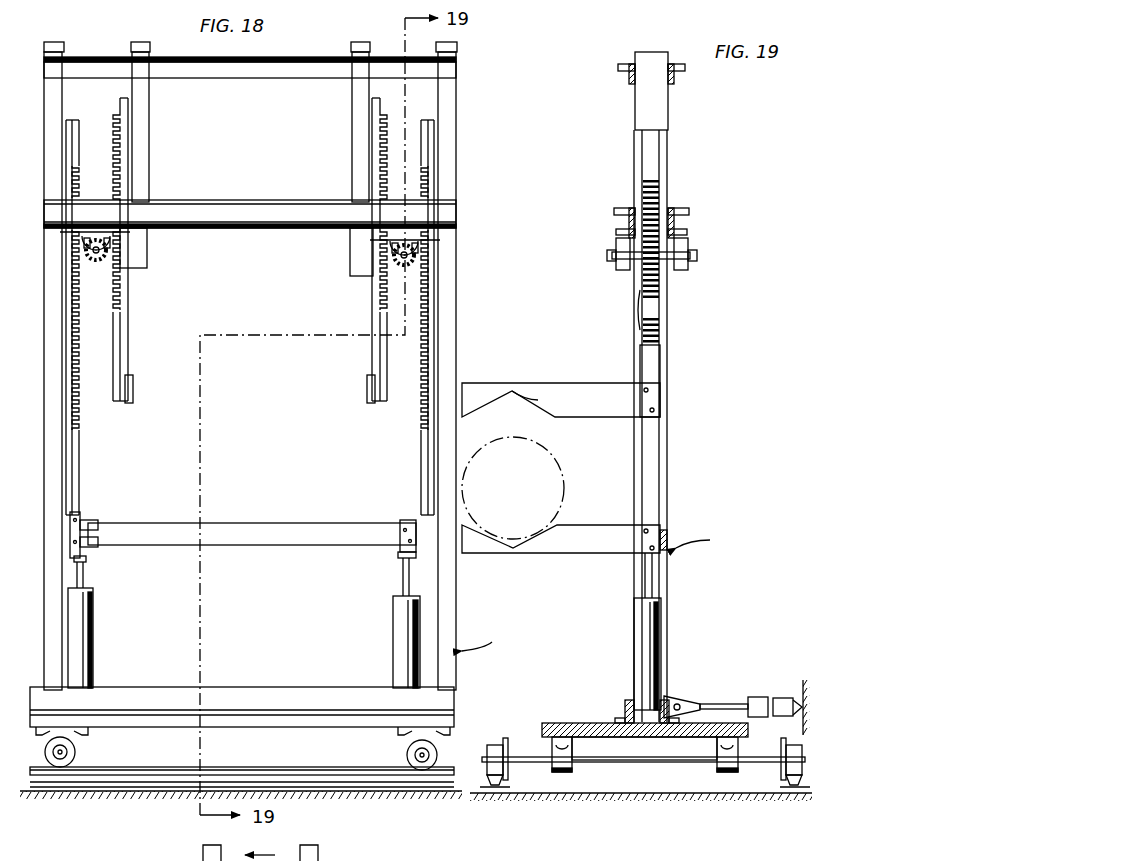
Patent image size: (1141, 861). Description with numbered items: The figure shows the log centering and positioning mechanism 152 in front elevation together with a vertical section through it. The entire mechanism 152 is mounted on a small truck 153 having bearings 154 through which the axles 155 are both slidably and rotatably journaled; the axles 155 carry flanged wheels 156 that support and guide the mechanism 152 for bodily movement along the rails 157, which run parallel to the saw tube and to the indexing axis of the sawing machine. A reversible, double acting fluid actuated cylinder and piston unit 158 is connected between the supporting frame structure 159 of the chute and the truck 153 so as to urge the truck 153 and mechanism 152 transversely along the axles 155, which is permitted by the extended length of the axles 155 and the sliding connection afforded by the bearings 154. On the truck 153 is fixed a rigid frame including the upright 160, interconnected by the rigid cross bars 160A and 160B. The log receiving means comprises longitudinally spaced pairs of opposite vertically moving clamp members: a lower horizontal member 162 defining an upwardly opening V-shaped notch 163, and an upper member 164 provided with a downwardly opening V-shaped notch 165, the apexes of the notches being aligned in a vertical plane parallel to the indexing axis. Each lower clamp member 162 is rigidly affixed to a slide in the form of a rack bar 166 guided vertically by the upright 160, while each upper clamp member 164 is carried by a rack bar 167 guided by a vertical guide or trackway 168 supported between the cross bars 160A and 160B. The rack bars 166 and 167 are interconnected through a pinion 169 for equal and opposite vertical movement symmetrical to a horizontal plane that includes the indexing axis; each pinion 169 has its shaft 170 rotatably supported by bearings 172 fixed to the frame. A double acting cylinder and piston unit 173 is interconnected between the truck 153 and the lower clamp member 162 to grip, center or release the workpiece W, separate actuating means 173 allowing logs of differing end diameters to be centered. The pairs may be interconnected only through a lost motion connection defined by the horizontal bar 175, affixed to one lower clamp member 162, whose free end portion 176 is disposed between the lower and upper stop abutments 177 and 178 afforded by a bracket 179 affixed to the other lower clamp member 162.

In FIG. 18, the work positioning mechanism 152 is at (495, 640).
In FIG. 19, the work positioning mechanism 152 is at (703, 539).
In FIG. 18, the truck 153 is at (285, 695).
In FIG. 19, the truck 153 is at (585, 723).
In FIG. 19, the bearings 154 is at (562, 775).
In FIG. 19, the axles 155 is at (680, 760).
In FIG. 19, the flanged wheels 156 is at (495, 745).
In FIG. 19, the rails 157 is at (492, 790).
In FIG. 19, the fluid actuated cylinder and piston unit 158 is at (756, 696).
In FIG. 19, the supporting frame structure 159 is at (800, 688).
In FIG. 18, the upright 160 is at (50, 472).
In FIG. 19, the upright 160 is at (651, 387).
In FIG. 18, the cross bar 160A is at (238, 72).
In FIG. 19, the cross bar 160A is at (624, 80).
In FIG. 18, the cross bar 160B is at (278, 212).
In FIG. 19, the cross bar 160B is at (625, 222).
In FIG. 18, the lower clamp member 162 is at (80, 518).
In FIG. 19, the lower clamp member 162 is at (572, 540).
In FIG. 19, the V-shaped notch 163 is at (500, 545).
In FIG. 18, the upper clamp member 164 is at (133, 390).
In FIG. 19, the upper clamp member 164 is at (585, 398).
In FIG. 19, the V-shaped notch 165 is at (535, 383).
In FIG. 18, the rack bar 166 is at (78, 418).
In FIG. 19, the rack bar 166 is at (660, 330).
In FIG. 18, the rack bar 167 is at (120, 308).
In FIG. 19, the rack bar 167 is at (660, 372).
In FIG. 18, the vertical guide or trackway 168 is at (150, 170).
In FIG. 18, the pinion 169 is at (90, 270).
In FIG. 19, the pinion 169 is at (638, 305).
In FIG. 18, the shaft 170 is at (100, 250).
In FIG. 19, the shaft 170 is at (697, 256).
In FIG. 18, the bearings 172 is at (96, 232).
In FIG. 19, the bearings 172 is at (622, 270).
In FIG. 18, the cylinder and piston unit 173 is at (80, 641).
In FIG. 19, the cylinder and piston unit 173 is at (652, 624).
In FIG. 18, the horizontal bar 175 is at (285, 527).
In FIG. 18, the free end portion 176 is at (95, 552).
In FIG. 18, the lower stop abutment 177 is at (88, 570).
In FIG. 18, the upper stop abutment 178 is at (95, 525).
In FIG. 18, the bracket 179 is at (98, 540).
In FIG. 19, the workpiece W is at (548, 455).